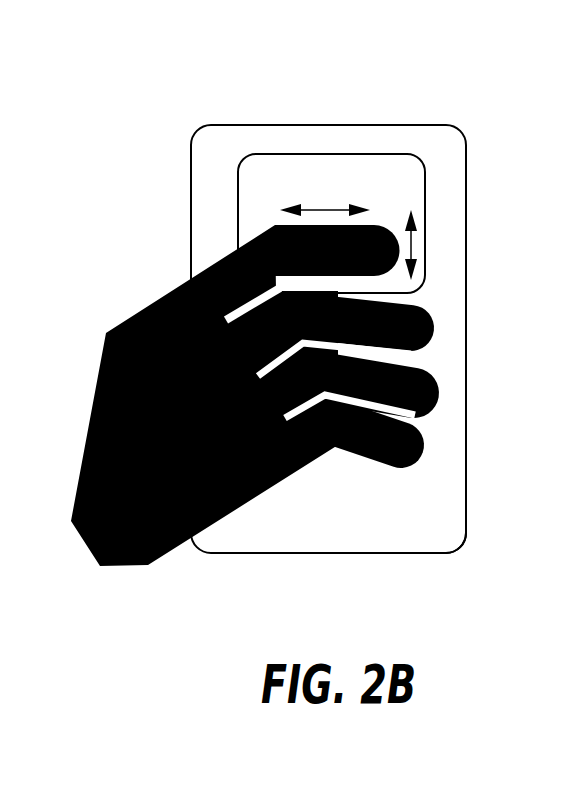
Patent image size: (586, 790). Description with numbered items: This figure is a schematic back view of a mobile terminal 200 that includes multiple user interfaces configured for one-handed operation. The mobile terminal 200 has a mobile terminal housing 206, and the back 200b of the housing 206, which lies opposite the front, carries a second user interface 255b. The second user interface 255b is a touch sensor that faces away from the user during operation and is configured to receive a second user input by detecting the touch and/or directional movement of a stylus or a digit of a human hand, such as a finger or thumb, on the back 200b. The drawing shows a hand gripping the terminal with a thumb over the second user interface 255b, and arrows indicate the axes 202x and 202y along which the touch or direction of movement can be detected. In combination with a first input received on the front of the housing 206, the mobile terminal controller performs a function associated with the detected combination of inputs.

The mobile terminal 200 is at (356, 324).
The back 200b is at (445, 505).
The mobile terminal housing 206 is at (227, 117).
The second user interface 255b is at (352, 170).
The axis 202x is at (302, 200).
The axis 202y is at (405, 235).